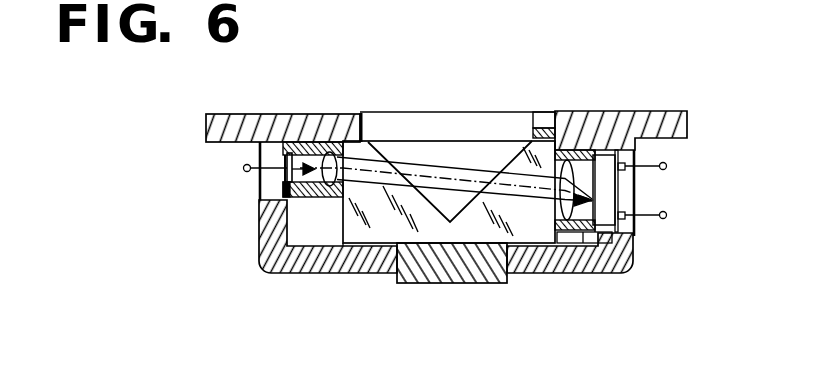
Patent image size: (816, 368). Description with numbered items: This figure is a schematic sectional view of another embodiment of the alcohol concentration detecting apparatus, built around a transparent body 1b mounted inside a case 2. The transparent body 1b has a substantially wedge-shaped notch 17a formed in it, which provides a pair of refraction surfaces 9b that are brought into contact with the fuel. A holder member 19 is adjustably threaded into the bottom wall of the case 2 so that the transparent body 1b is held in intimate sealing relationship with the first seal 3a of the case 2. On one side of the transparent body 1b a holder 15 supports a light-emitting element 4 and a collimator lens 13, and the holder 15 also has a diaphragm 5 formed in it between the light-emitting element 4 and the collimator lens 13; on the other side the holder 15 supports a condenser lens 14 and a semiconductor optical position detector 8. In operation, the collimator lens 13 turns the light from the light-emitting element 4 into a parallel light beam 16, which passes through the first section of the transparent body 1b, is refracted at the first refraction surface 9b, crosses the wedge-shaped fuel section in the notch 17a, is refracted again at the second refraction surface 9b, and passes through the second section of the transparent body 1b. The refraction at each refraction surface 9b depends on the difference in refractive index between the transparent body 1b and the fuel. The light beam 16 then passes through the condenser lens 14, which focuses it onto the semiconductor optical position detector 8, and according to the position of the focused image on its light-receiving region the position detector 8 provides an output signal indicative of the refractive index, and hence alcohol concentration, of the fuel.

The case 2 is at (622, 113).
The transparent body 1b is at (361, 231).
The holder member 19 is at (465, 266).
The diaphragm 5 is at (302, 143).
The holder 15 is at (283, 194).
The light-emitting element 4 is at (282, 177).
The collimator lens 13 is at (324, 152).
The wedge-shaped notch 17a is at (427, 153).
The refraction surfaces 9b is at (413, 148).
The light beam 16 is at (462, 153).
The first seal 3a is at (542, 128).
The condenser lens 14 is at (566, 236).
The semiconductor optical position detector 8 is at (600, 188).